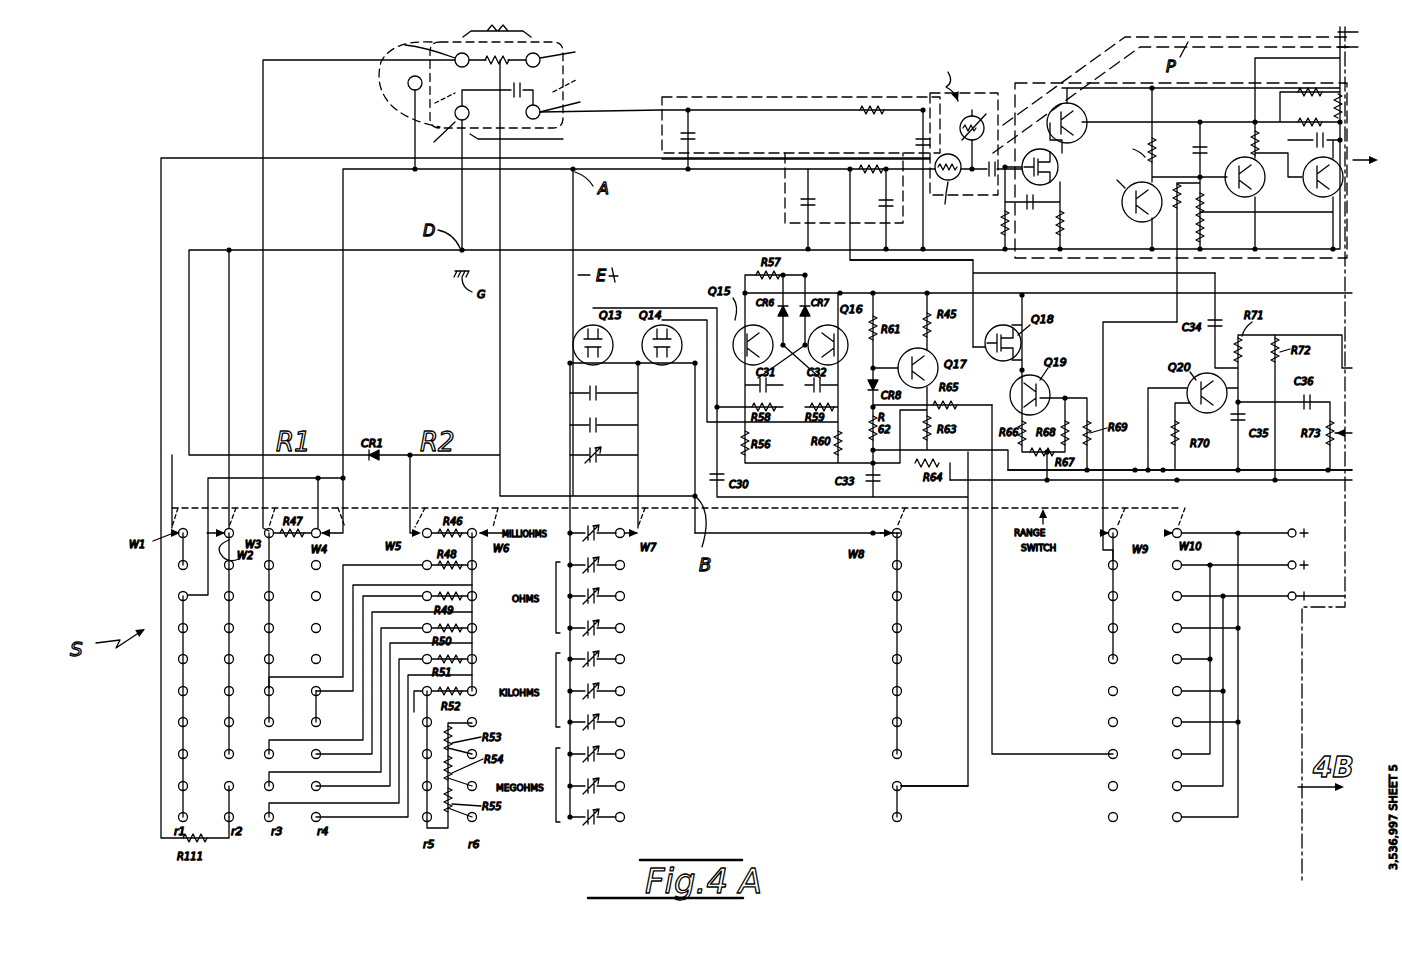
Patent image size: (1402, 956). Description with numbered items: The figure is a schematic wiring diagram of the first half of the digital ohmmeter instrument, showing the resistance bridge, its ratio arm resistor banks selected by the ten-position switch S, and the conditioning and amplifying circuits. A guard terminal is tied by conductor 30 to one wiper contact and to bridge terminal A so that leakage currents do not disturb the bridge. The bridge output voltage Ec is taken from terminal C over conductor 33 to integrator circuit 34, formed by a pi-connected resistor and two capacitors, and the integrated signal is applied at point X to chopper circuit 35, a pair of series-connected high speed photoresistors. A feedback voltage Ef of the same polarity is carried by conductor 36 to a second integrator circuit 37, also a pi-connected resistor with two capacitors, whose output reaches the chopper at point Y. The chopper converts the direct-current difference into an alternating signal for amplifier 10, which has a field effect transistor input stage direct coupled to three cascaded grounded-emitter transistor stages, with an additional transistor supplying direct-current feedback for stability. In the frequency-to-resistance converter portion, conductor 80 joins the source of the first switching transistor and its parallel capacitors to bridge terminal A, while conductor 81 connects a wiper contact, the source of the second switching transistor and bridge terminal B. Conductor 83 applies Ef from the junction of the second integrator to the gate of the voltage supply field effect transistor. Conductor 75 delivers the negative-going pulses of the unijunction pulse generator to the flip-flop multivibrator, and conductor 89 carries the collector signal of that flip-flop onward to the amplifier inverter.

The conductor 30 is at (406, 140).
The conductor 33 is at (601, 98).
The integrator circuit 34 is at (858, 97).
The chopper circuit 35 is at (982, 93).
The conductor 36 is at (717, 161).
The integrator circuit 37 is at (785, 197).
The amplifier 10 is at (1242, 262).
The conductor 80 is at (576, 221).
The conductor 81 is at (801, 534).
The conductor 83 is at (978, 264).
The conductor 75 is at (1205, 481).
The conductor 89 is at (1347, 510).